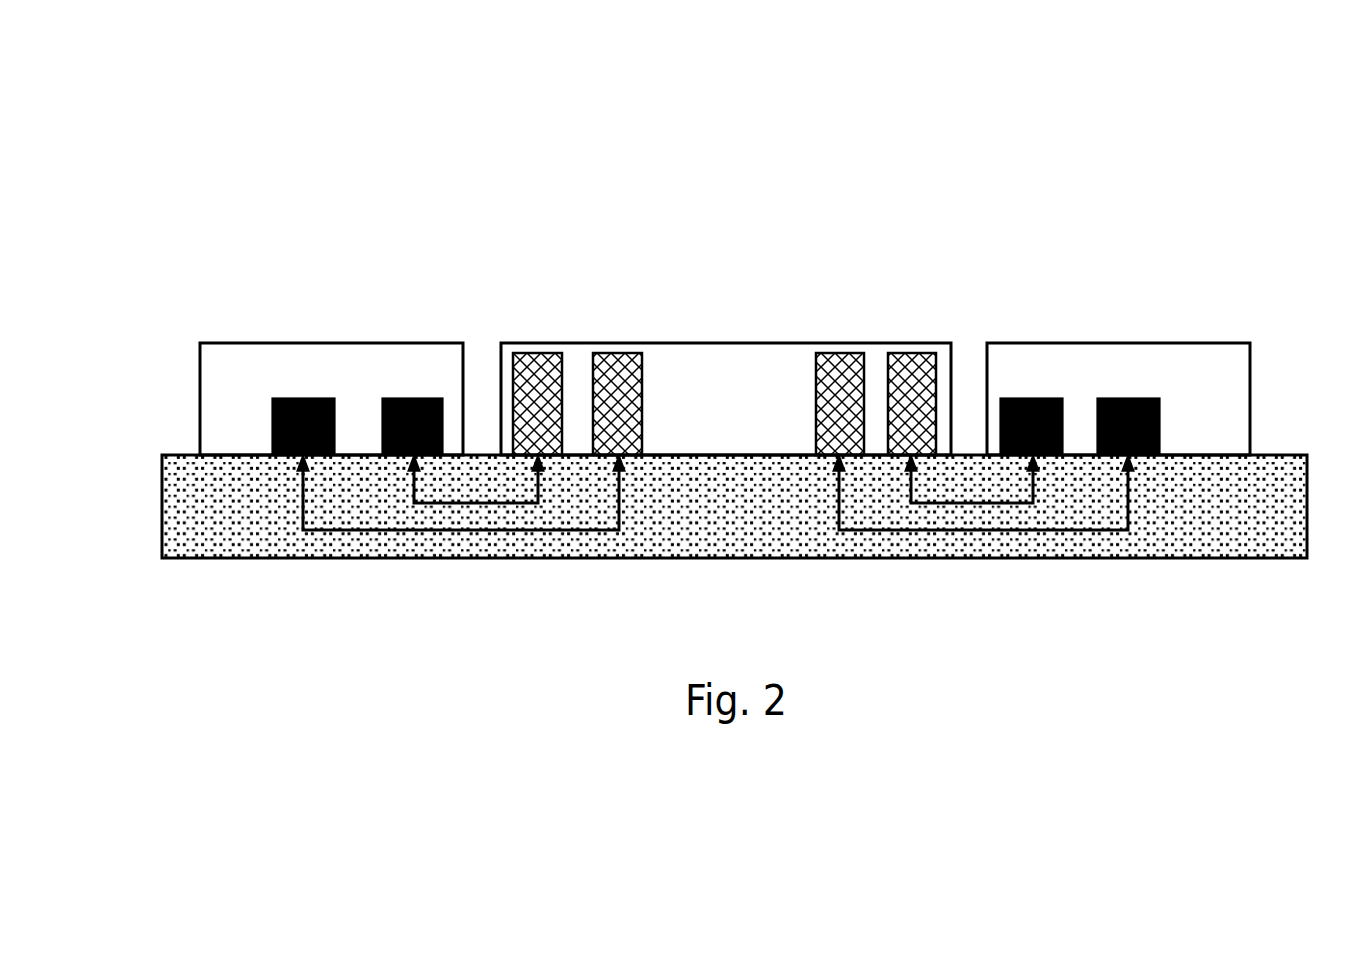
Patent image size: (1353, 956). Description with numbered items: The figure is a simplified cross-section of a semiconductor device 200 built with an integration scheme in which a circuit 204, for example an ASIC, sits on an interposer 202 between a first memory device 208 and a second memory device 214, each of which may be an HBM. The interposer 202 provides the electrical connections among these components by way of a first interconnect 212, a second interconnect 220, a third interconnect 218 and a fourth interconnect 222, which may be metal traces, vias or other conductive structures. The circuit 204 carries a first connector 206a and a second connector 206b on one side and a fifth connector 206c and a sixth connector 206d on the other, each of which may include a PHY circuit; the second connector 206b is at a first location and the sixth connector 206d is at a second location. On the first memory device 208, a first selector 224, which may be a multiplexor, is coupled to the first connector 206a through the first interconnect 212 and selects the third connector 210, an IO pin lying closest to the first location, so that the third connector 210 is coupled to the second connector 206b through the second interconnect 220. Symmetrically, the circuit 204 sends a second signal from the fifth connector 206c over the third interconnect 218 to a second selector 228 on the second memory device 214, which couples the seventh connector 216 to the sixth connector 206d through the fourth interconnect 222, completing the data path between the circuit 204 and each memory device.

The semiconductor device 200 is at (1130, 168).
The interposer 202 is at (753, 512).
The circuit 204 is at (752, 380).
The first connector 206a is at (538, 377).
The second connector 206b is at (622, 372).
The fifth connector 206c is at (933, 370).
The sixth connector 206d is at (837, 375).
The first memory device 208 is at (238, 378).
The third connector 210 is at (312, 437).
The first interconnect 212 is at (480, 507).
The second memory device 214 is at (1222, 380).
The seventh connector 216 is at (1118, 415).
The third interconnect 218 is at (977, 500).
The second interconnect 220 is at (388, 528).
The fourth interconnect 222 is at (1073, 538).
The first selector 224 is at (420, 418).
The second selector 228 is at (1027, 407).